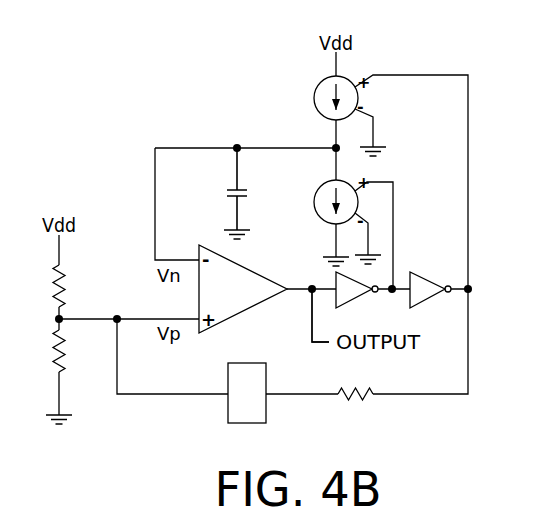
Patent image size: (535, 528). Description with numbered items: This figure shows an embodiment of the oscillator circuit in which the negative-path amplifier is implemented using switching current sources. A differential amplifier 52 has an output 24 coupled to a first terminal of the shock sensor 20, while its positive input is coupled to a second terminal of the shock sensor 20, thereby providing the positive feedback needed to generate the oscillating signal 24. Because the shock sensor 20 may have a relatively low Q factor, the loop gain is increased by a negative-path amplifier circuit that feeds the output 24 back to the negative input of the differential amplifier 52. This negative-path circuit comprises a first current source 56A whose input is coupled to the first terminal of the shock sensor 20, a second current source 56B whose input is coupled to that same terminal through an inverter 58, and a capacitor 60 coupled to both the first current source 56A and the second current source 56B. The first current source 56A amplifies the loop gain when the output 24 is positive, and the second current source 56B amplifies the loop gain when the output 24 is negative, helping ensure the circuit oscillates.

The first current source 56A is at (309, 84).
The second current source 56B is at (318, 221).
The capacitor 60 is at (256, 190).
The differential amplifier 52 is at (236, 320).
The inverter 58 is at (425, 272).
The output 24 is at (313, 344).
The shock sensor 20 is at (247, 425).